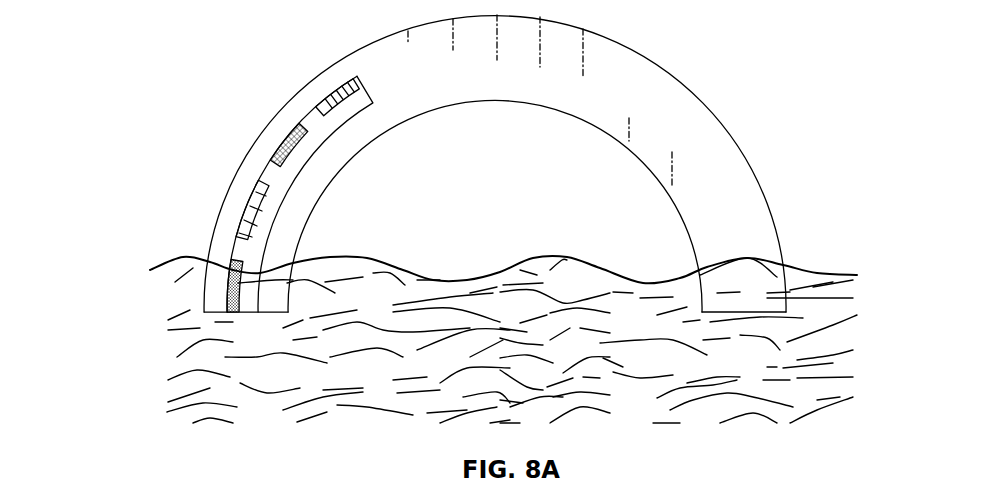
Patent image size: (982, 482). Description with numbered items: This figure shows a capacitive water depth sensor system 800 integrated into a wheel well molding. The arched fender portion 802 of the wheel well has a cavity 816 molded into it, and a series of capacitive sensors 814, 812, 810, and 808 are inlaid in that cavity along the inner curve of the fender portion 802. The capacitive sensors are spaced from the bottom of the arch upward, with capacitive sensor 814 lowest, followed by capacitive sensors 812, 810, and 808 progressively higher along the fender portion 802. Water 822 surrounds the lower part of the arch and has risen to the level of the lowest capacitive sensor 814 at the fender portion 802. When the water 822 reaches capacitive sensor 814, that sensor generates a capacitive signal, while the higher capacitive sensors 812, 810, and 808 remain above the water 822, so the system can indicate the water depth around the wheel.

The wearable ring device system 800 is at (89, 79).
The fender portion 802 is at (387, 35).
The capacitive sensor 808 is at (320, 105).
The capacitive sensor 810 is at (284, 150).
The capacitive sensor 812 is at (250, 208).
The capacitive sensor 814 is at (232, 262).
The cavity 816 is at (296, 181).
The water 822 is at (818, 272).